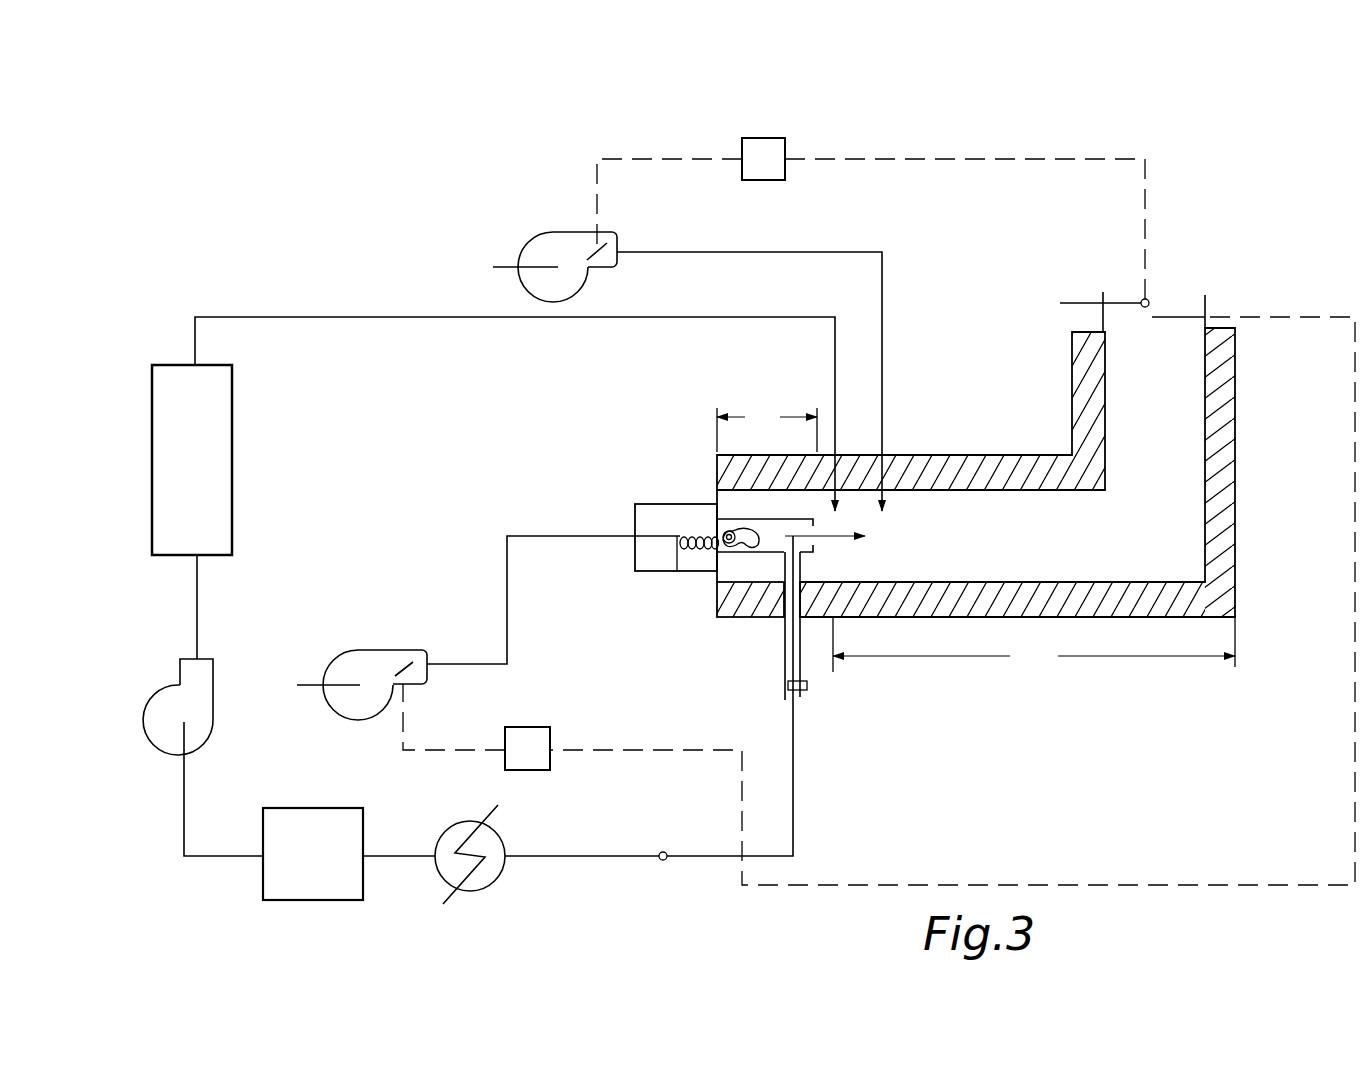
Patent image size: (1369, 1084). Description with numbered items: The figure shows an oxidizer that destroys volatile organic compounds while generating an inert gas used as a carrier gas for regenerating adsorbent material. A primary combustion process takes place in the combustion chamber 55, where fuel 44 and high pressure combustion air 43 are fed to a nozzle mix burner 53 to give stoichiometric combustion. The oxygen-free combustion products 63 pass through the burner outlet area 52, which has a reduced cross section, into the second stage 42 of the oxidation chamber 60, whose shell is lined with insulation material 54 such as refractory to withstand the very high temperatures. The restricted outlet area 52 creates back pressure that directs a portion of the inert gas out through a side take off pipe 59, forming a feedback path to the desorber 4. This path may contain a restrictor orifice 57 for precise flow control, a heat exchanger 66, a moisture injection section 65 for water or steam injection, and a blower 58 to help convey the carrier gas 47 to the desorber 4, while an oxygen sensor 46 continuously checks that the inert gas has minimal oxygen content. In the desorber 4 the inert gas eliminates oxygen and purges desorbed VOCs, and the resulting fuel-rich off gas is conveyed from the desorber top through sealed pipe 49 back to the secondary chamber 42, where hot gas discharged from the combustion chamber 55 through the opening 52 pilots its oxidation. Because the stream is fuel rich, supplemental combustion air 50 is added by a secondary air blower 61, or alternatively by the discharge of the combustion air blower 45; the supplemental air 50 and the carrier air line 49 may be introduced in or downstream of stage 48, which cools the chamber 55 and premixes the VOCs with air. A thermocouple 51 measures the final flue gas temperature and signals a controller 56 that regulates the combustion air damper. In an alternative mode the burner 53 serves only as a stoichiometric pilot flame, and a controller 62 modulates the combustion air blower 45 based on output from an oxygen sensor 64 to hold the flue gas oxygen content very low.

The desorber 4 is at (236, 482).
The second stage of the oxidation chamber 42 is at (1034, 644).
The high pressure combustion air 43 is at (556, 534).
The fuel 44 is at (677, 574).
The combustion air blower 45 is at (377, 648).
The oxygen sensor 46 is at (810, 687).
The carrier gas 47 is at (797, 782).
The stage 48 is at (767, 423).
The pipe 49 is at (797, 316).
The supplemental combustion air 50 is at (828, 250).
The thermocouple 51 is at (1084, 311).
The outlet area 52 is at (817, 525).
The nozzle mix burner 53 is at (635, 503).
The insulation material 54 is at (1240, 485).
The combustion chamber 55 is at (752, 557).
The controller 56 is at (775, 150).
The restrictor orifice 57 is at (663, 862).
The blower 58 is at (154, 690).
The side take off pipe 59 is at (782, 701).
The oxidation chamber 60 is at (1084, 548).
The secondary air blower 61 is at (547, 240).
The controller 62 is at (517, 727).
The oxygen-free combustion products 63 is at (839, 542).
The oxygen sensor 64 is at (1180, 320).
The moisture injection section 65 is at (310, 902).
The heat exchanger 66 is at (484, 890).